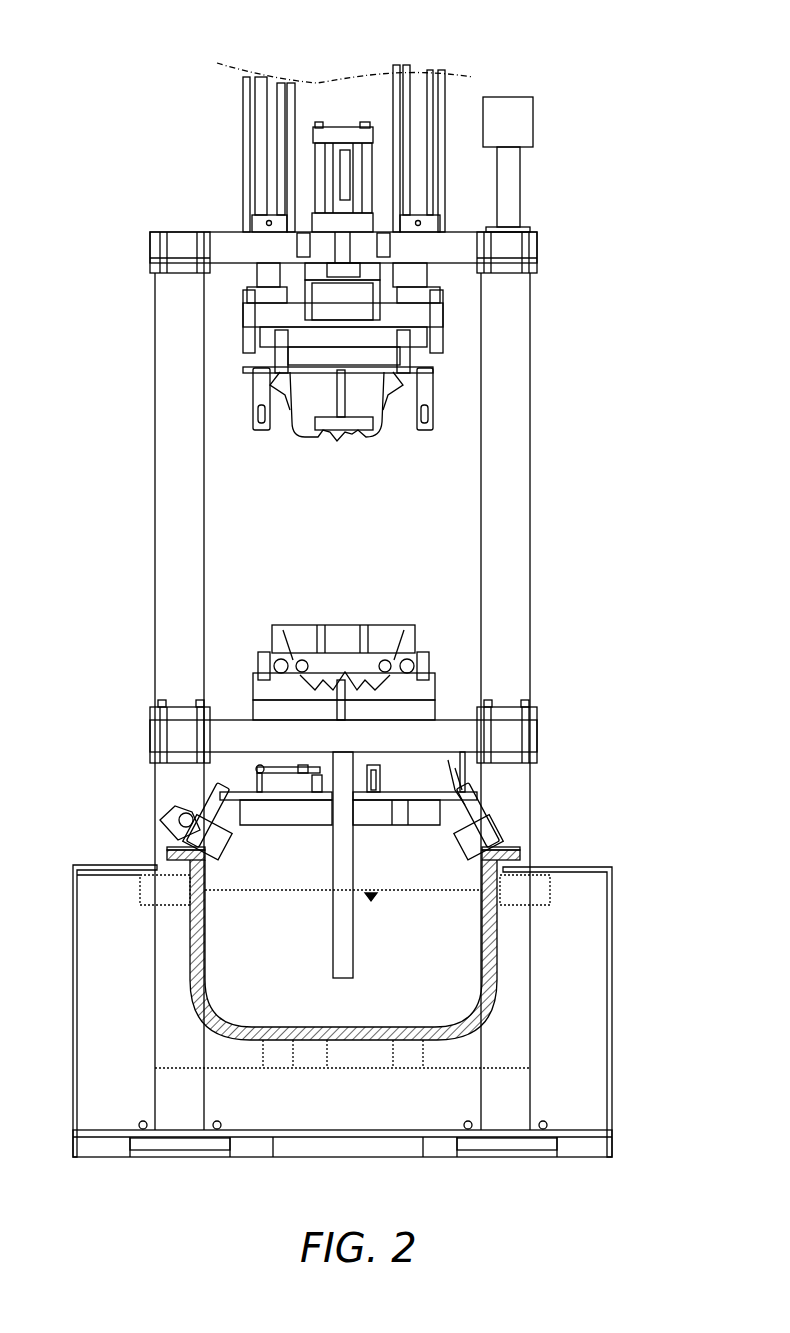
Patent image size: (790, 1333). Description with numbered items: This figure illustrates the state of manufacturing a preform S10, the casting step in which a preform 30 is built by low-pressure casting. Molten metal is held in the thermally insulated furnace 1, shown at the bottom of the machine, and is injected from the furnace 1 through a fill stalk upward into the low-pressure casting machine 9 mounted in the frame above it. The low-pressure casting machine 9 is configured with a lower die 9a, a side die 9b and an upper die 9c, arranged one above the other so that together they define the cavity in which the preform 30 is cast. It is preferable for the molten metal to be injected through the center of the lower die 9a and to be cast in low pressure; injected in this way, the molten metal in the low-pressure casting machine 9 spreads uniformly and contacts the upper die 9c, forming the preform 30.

The thermally insulated furnace 1 is at (497, 933).
The low-pressure casting machine 9 is at (457, 491).
The lower die 9a is at (445, 686).
The side die 9b is at (417, 650).
The upper die 9c is at (393, 428).
The preform 30 is at (257, 672).
The manufacturing a preform S10 is at (387, 27).